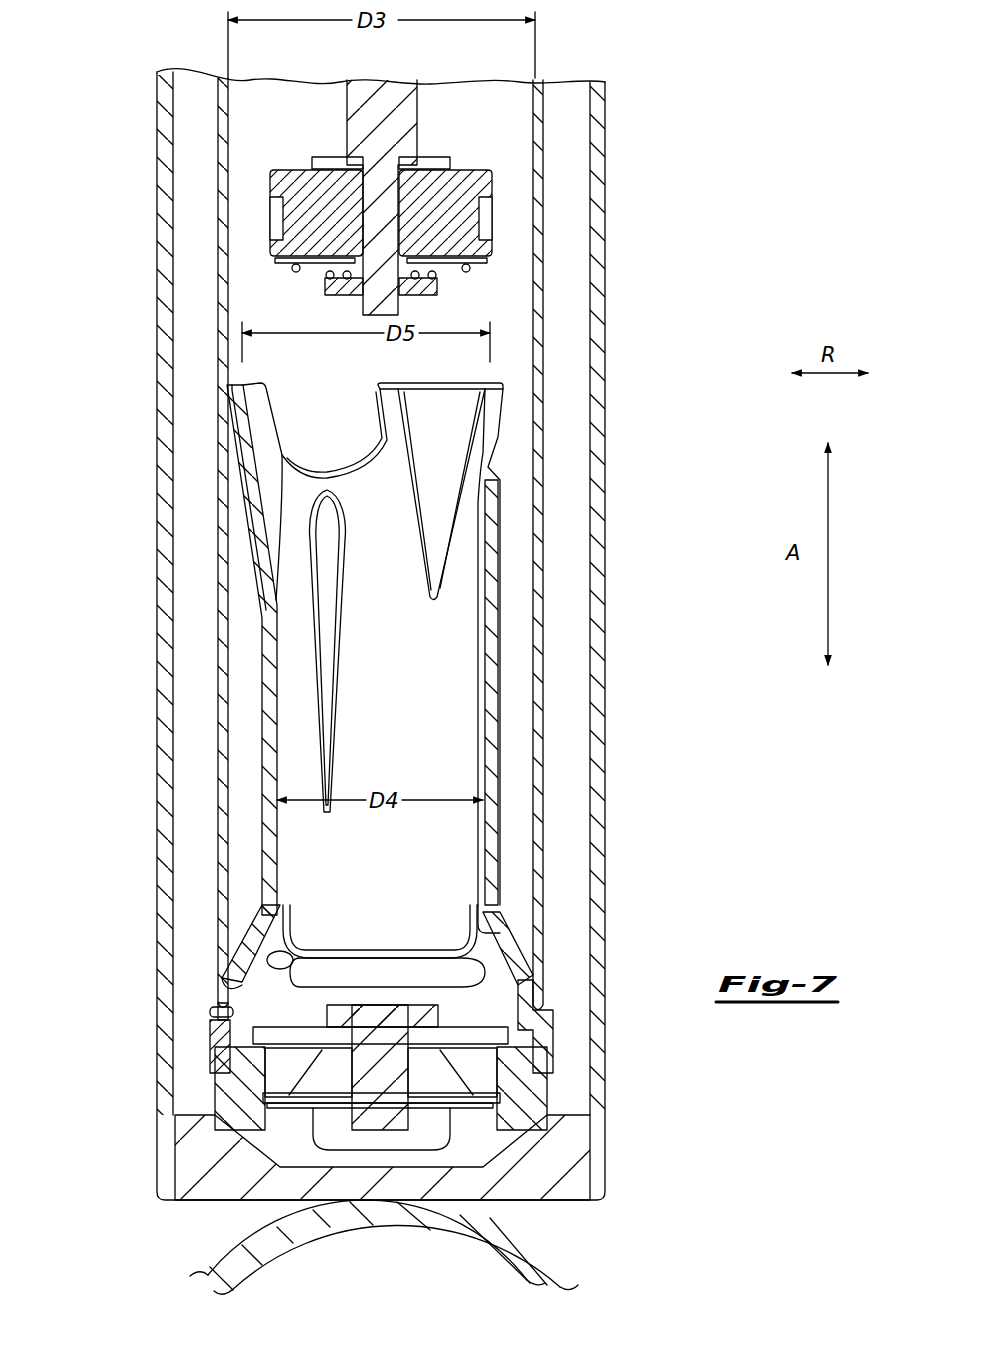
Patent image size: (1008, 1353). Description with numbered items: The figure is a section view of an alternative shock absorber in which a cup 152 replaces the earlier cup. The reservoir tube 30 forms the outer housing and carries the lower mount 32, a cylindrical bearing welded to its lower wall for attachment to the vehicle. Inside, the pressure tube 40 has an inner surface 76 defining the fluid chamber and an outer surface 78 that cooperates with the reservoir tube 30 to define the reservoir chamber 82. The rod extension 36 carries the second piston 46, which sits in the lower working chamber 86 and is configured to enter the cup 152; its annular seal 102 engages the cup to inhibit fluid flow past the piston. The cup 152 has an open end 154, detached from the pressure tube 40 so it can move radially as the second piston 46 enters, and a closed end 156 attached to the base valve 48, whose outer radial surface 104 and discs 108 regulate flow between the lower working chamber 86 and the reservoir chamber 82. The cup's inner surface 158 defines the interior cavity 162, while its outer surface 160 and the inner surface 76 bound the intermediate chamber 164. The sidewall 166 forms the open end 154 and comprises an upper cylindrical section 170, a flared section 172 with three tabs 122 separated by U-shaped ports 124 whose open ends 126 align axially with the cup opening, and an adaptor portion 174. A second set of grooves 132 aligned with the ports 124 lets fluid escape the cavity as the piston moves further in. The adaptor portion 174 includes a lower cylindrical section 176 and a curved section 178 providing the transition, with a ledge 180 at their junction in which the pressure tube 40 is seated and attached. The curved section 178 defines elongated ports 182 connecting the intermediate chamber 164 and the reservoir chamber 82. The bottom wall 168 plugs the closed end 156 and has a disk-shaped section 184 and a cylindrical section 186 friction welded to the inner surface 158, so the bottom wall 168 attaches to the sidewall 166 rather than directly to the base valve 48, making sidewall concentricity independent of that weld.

The reservoir tube 30 is at (156, 298).
The lower mount 32 is at (523, 1262).
The rod extension 36 is at (418, 113).
The pressure tube 40 is at (542, 258).
The second piston 46 is at (266, 171).
The base valve 48 is at (552, 1086).
The inner surface 76 is at (533, 98).
The outer surface 78 is at (545, 155).
The reservoir chamber 82 is at (185, 161).
The lower working chamber 86 is at (272, 108).
The annular seal 102 is at (495, 210).
The outer radial surface 104 is at (548, 1105).
The discs 108 is at (370, 1113).
The tabs 122 is at (248, 383).
The ports 124 is at (303, 466).
The open ends 126 is at (365, 410).
The second set of grooves 132 is at (330, 600).
The cup 152 is at (503, 556).
The open end 154 is at (433, 410).
The closed end 156 is at (403, 922).
The inner surface 158 is at (483, 667).
The outer surface 160 is at (505, 718).
The interior cavity 162 is at (386, 718).
The intermediate chamber 164 is at (518, 784).
The sidewall 166 is at (262, 470).
The bottom wall 168 is at (295, 962).
The upper cylindrical section 170 is at (262, 667).
The flared section 172 is at (258, 414).
The adaptor portion 174 is at (253, 938).
The lower cylindrical section 176 is at (222, 1037).
The curved section 178 is at (243, 975).
The ledge 180 is at (553, 1008).
The ports 182 is at (405, 957).
The disk-shaped section 184 is at (333, 950).
The cylindrical section 186 is at (297, 915).